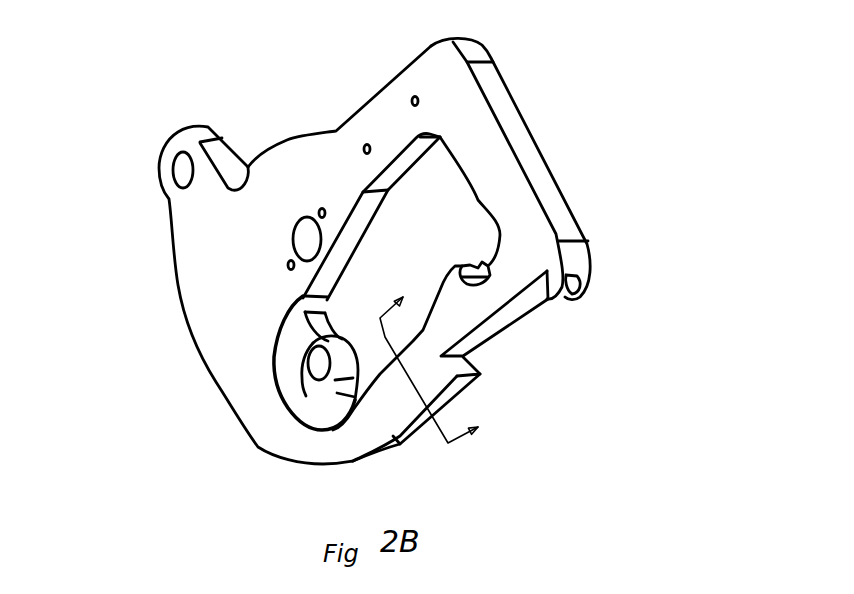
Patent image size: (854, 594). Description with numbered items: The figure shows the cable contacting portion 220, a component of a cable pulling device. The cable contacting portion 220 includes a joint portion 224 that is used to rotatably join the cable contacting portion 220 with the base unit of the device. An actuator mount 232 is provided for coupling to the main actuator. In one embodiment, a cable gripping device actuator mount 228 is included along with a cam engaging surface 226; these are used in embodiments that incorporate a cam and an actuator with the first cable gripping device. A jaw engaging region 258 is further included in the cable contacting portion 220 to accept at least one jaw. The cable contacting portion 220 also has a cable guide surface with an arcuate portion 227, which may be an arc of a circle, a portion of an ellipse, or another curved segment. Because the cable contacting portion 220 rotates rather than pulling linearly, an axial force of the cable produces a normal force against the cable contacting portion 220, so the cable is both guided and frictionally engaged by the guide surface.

The cable contacting portion 220 is at (665, 117).
The joint portion 224 is at (297, 248).
The cam engaging surface 226 is at (492, 242).
The arcuate portion 227 is at (258, 449).
The cable gripping device actuator mount 228 is at (312, 372).
The actuator mount 232 is at (176, 170).
The jaw engaging region 258 is at (517, 307).